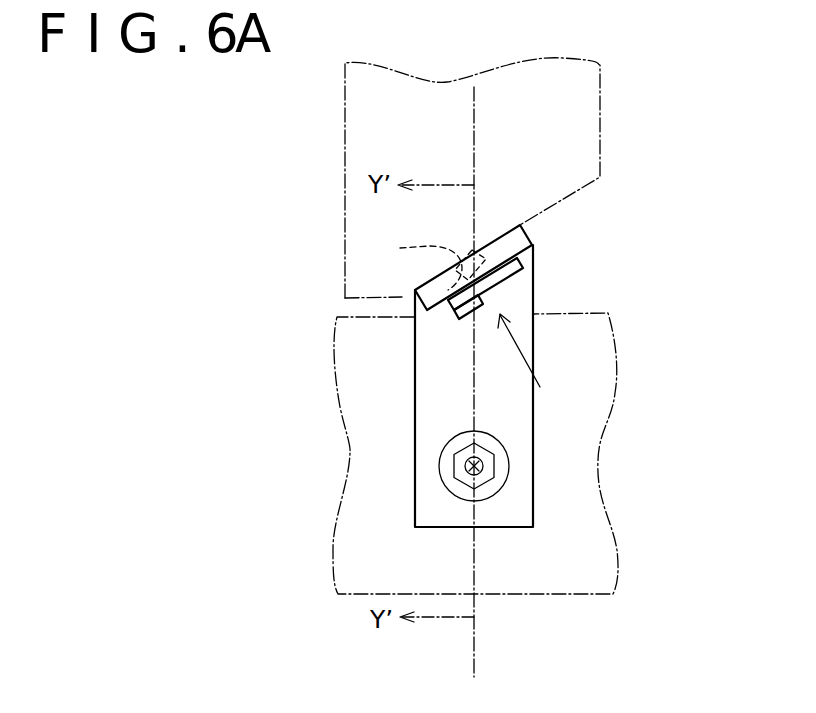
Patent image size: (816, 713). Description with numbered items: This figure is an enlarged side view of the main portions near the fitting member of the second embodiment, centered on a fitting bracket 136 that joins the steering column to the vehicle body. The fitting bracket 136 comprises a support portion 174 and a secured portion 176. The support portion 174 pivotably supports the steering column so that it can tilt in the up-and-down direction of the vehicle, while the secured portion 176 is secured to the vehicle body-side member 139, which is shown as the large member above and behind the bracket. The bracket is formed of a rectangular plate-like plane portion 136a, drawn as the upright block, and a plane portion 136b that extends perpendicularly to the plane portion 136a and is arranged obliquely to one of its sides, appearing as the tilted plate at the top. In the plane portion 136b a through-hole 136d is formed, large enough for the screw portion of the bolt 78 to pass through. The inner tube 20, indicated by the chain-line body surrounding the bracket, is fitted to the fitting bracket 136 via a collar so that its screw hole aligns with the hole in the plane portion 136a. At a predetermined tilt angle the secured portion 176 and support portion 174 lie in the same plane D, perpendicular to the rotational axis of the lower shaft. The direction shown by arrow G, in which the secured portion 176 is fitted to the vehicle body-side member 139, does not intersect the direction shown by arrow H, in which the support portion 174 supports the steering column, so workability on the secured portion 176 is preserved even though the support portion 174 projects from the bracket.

The vehicle body-side member 139 is at (600, 136).
The inner tube 20 is at (608, 313).
The fitting bracket 136 is at (533, 280).
The plane portion 136a is at (533, 430).
The plane portion 136b is at (526, 234).
The through-hole 136d is at (400, 248).
The secured portion 176 is at (443, 313).
The bolt 78 is at (455, 303).
The support portion 174 is at (523, 509).
The arrow G is at (520, 348).
The arrow H is at (464, 463).
The plane D is at (473, 145).